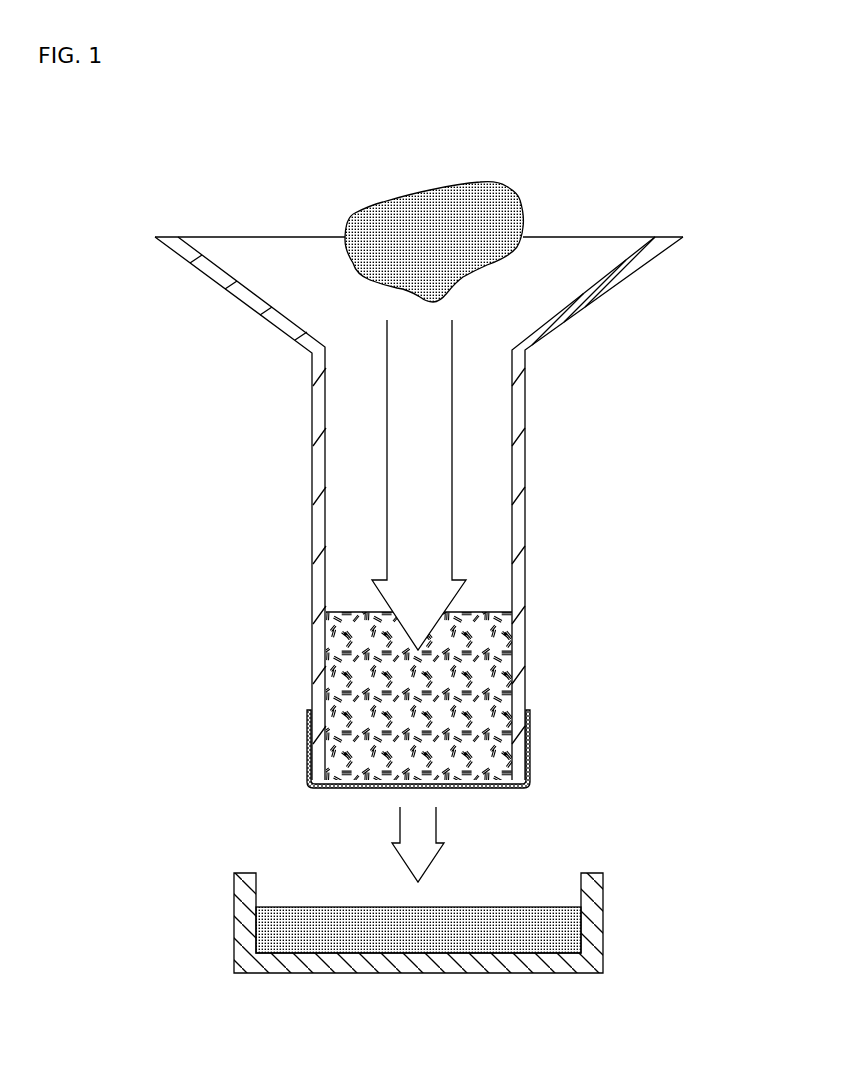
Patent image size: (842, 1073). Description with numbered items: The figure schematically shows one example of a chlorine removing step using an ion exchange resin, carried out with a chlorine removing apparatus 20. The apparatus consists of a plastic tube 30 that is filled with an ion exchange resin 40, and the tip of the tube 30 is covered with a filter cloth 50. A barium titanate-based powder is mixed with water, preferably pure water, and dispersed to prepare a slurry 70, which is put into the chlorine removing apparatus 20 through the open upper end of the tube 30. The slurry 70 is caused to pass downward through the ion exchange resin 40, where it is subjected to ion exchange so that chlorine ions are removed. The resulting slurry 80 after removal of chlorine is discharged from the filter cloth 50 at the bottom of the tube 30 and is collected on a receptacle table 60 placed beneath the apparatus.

The chlorine removing apparatus 20 is at (692, 198).
The plastic tube 30 is at (519, 450).
The ion exchange resin 40 is at (480, 670).
The filter cloth 50 is at (530, 752).
The receptacle table 60 is at (583, 900).
The slurry 70 is at (371, 222).
The slurry after removal of chlorine 80 is at (562, 930).